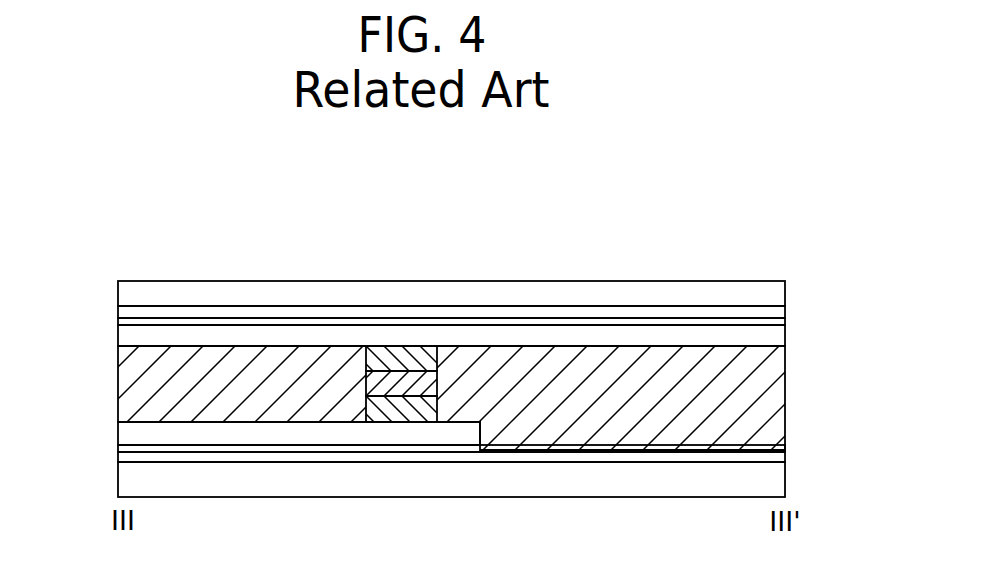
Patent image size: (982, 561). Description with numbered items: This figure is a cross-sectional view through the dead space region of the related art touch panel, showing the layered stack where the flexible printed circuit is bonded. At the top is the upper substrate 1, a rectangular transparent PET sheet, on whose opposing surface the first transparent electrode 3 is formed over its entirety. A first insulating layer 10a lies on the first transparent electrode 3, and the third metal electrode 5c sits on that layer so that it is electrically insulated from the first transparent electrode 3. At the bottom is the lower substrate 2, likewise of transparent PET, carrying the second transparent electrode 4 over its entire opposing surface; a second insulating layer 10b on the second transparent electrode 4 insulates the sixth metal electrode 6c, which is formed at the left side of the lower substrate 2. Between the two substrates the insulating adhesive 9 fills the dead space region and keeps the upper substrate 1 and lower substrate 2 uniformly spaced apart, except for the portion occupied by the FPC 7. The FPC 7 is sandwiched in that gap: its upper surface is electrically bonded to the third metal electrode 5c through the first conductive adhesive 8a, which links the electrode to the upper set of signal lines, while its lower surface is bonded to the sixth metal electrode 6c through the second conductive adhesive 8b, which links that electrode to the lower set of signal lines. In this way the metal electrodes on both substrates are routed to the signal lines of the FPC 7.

The upper substrate 1 is at (773, 290).
The first transparent electrode 3 is at (773, 309).
The first insulating layer 10a is at (128, 323).
The third metal electrode 5c is at (767, 337).
The insulating adhesive 9 is at (777, 394).
The flexible printed circuit 7 is at (385, 356).
The first conductive adhesive 8a is at (422, 353).
The second conductive adhesive 8b is at (418, 412).
The sixth metal electrode 6c is at (128, 433).
The second transparent electrode 4 is at (773, 453).
The second insulating layer 10b is at (128, 448).
The lower substrate 2 is at (773, 475).